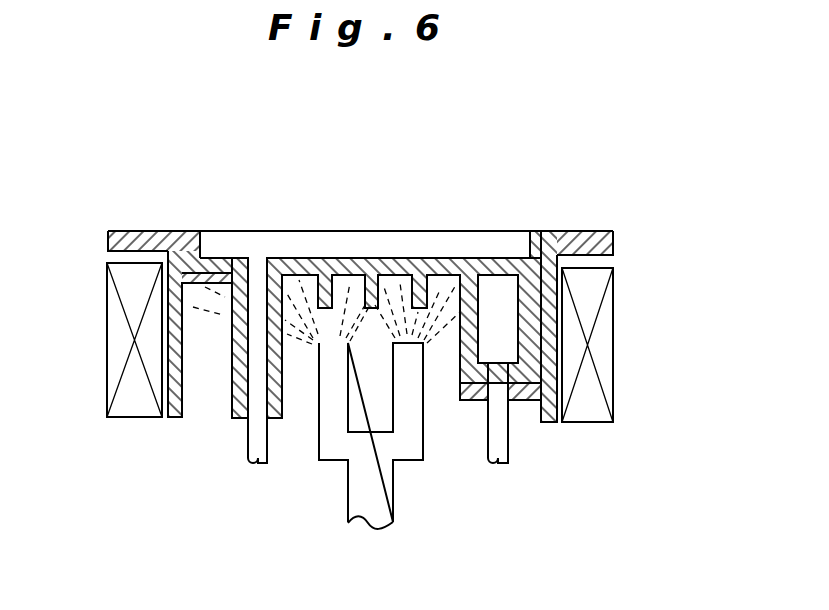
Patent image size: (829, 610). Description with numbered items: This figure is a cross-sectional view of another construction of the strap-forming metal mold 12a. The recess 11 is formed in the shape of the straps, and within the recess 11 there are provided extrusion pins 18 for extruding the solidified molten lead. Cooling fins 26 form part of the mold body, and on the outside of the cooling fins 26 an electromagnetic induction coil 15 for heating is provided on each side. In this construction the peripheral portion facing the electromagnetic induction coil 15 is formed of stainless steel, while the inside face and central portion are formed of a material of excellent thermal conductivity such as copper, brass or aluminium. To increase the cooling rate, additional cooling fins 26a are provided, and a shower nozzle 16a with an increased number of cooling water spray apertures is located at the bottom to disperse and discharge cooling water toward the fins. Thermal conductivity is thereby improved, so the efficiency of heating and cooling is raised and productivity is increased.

The recess 11 is at (370, 234).
The strap-forming metal mold 12a is at (296, 224).
The electromagnetic induction coil 15 is at (120, 344).
The shower nozzle 16a is at (362, 472).
The extrusion pin 18 is at (250, 446).
The cooling fins 26 is at (182, 395).
The cooling fins 26a is at (335, 302).